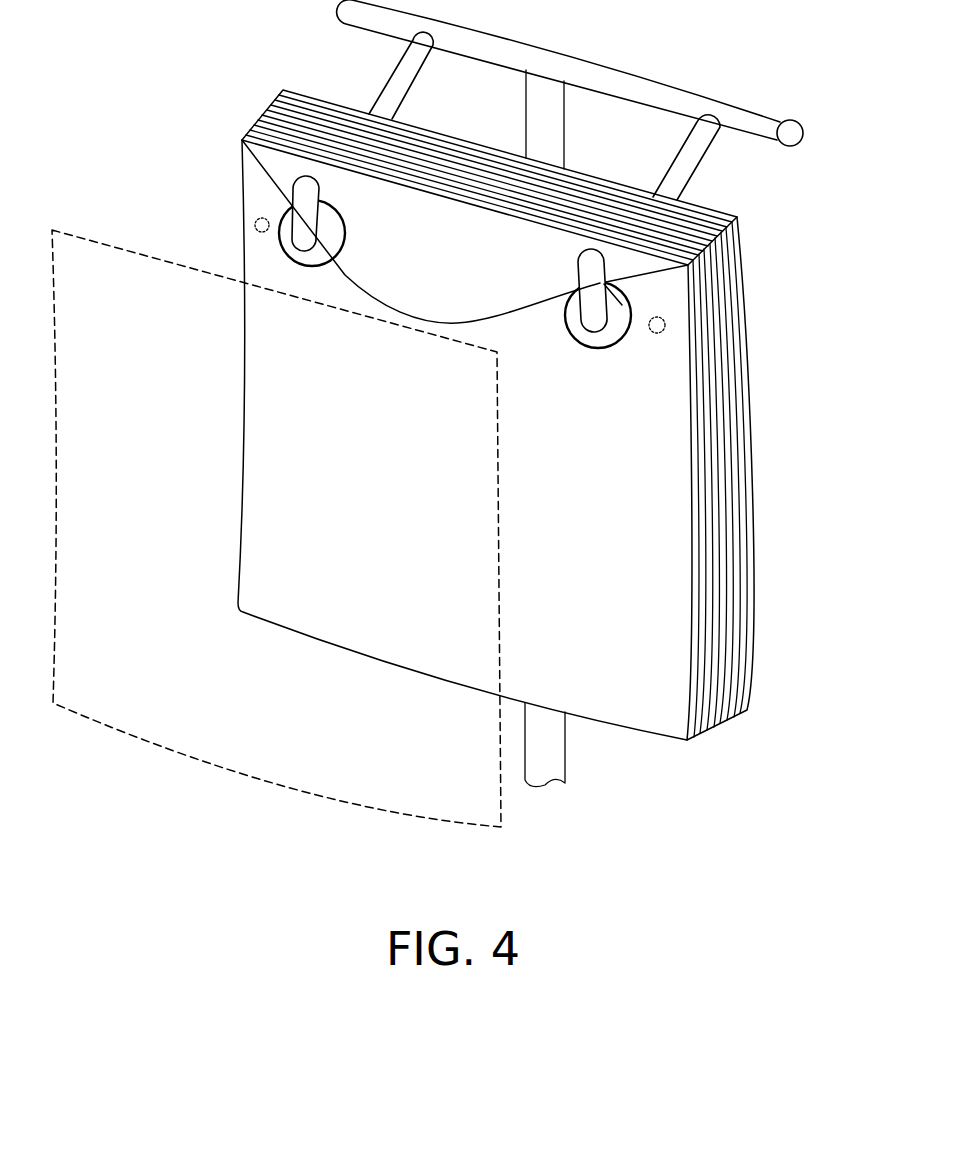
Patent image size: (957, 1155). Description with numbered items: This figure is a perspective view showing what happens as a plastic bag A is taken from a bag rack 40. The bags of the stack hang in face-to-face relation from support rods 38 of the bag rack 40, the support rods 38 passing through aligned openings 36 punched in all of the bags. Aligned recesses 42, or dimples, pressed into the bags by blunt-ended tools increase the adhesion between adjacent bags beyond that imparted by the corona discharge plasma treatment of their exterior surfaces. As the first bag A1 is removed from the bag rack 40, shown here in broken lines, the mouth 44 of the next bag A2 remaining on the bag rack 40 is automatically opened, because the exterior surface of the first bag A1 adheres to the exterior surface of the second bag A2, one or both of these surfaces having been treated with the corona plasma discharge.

The bag rack 40 is at (613, 80).
The support rods 38 is at (402, 83).
The openings 36 is at (287, 208).
The recesses 42 is at (250, 228).
The mouth 44 is at (515, 310).
The plastic bag A is at (533, 415).
The first bag A1 is at (163, 748).
The second bag A2 is at (657, 607).